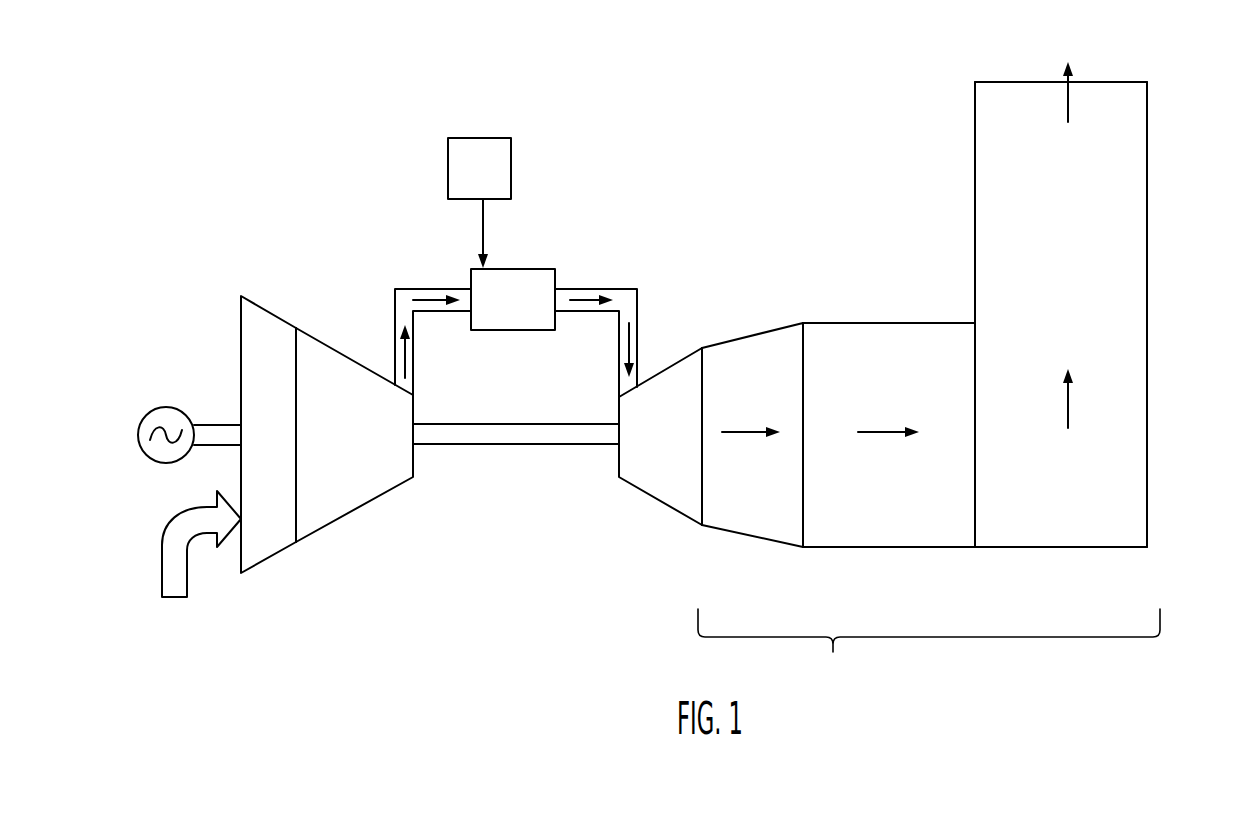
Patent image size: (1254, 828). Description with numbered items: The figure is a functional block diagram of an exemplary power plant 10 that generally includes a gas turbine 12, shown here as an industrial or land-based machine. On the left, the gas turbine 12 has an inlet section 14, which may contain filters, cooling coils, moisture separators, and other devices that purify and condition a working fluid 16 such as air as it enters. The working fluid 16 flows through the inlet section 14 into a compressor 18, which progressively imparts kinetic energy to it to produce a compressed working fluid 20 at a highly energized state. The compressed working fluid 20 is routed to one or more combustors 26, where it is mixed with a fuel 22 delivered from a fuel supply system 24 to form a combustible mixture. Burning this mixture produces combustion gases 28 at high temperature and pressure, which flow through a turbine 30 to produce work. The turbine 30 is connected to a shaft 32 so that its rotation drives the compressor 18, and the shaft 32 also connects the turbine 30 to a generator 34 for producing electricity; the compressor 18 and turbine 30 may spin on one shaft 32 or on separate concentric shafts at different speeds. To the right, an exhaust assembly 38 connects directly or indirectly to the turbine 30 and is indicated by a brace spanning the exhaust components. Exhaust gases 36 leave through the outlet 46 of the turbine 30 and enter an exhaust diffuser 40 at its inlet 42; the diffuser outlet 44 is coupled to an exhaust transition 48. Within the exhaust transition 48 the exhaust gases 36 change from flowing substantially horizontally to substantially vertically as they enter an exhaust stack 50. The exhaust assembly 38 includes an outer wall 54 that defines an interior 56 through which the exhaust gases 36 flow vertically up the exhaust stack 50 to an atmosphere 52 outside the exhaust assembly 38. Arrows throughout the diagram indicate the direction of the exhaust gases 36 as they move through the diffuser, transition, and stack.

The power plant 10 is at (614, 122).
The gas turbine 12 is at (406, 550).
The inlet section 14 is at (279, 453).
The working fluid 16 is at (170, 600).
The compressor 18 is at (359, 453).
The compressed working fluid 20 is at (395, 352).
The fuel 22 is at (484, 232).
The fuel supply system 24 is at (494, 188).
The combustors 26 is at (527, 316).
The combustion gases 28 is at (640, 343).
The turbine 30 is at (674, 459).
The shaft 32 is at (490, 447).
The generator 34 is at (167, 406).
The exhaust gases 36 is at (732, 434).
The exhaust assembly 38 is at (929, 647).
The exhaust diffuser 40 is at (740, 534).
The inlet 42 is at (702, 526).
The outlet 44 is at (803, 323).
The outlet 46 is at (702, 347).
The exhaust transition 48 is at (873, 549).
The exhaust stack 50 is at (1147, 275).
The atmosphere 52 is at (1012, 39).
The outer wall 54 is at (1147, 436).
The interior 56 is at (1037, 513).